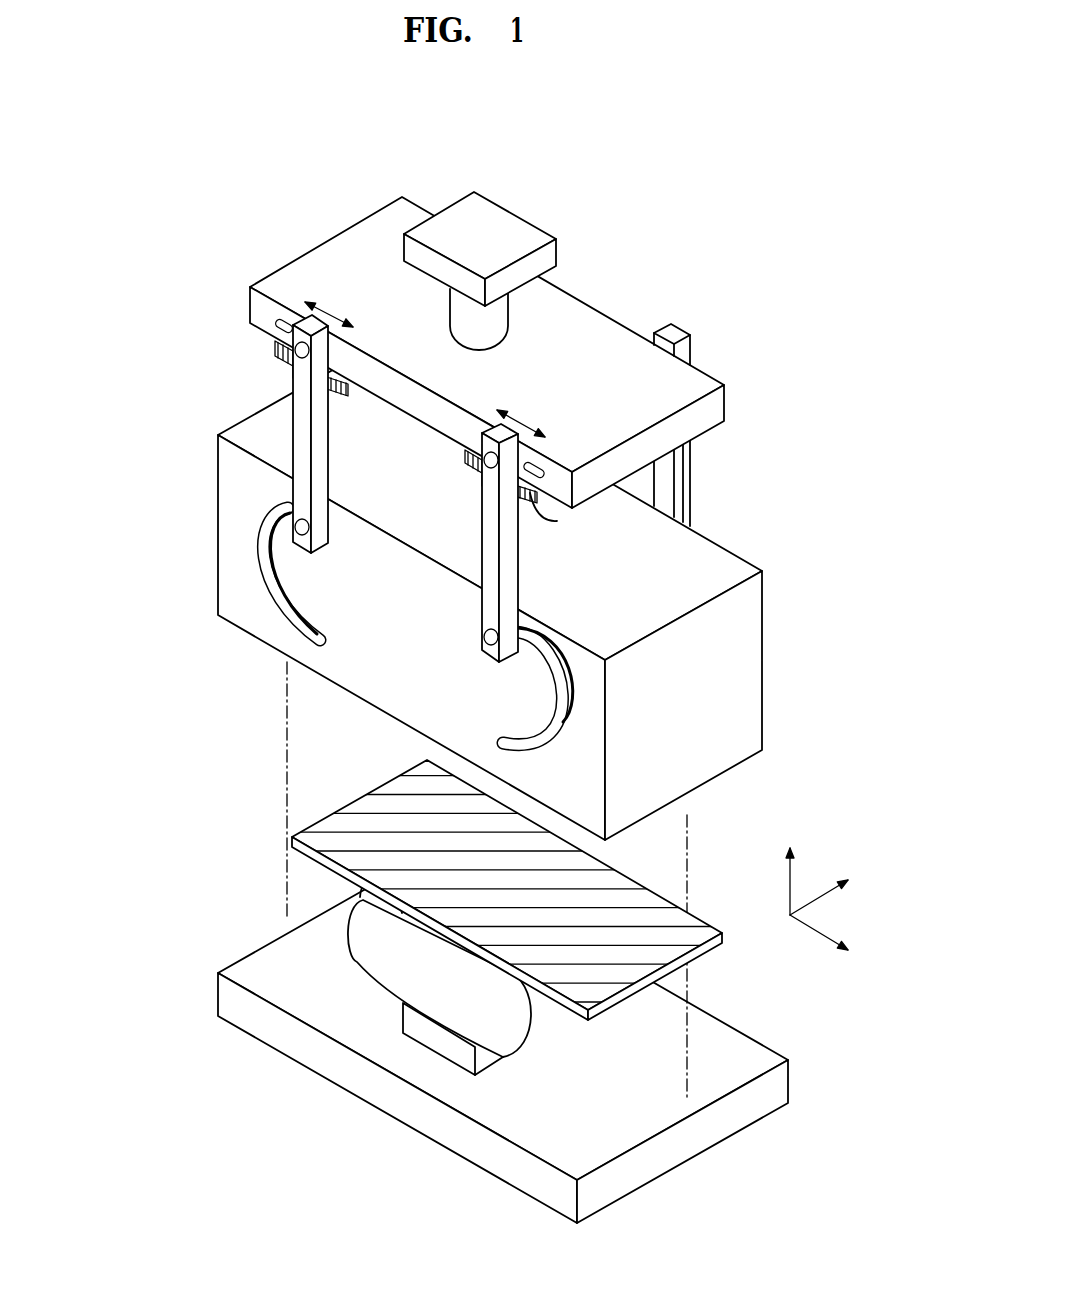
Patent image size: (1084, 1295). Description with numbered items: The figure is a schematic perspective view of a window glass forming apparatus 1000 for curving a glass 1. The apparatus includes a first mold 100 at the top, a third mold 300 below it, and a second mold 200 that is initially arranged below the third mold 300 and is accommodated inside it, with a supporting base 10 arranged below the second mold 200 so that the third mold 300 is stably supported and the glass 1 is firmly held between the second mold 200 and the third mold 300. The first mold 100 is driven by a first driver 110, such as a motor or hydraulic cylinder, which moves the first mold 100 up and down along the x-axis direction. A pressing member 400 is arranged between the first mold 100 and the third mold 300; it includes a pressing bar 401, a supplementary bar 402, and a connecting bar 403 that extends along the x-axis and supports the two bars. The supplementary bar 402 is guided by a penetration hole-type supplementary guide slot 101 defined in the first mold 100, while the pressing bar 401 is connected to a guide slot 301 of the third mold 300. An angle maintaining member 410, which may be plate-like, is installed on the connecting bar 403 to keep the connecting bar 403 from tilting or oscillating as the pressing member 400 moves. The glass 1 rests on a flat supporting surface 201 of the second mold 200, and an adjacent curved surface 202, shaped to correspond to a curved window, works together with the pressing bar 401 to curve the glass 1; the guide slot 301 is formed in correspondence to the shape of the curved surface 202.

The window glass forming apparatus 1000 is at (733, 267).
The glass 1 is at (372, 803).
The supporting base 10 is at (346, 1068).
The first mold 100 is at (592, 326).
The supplementary guide slot 101 is at (281, 321).
The first driver 110 is at (512, 222).
The second mold 200 is at (367, 985).
The supporting surface 201 is at (358, 873).
The curved surface 202 is at (352, 930).
The third mold 300 is at (233, 582).
The guide slot 301 is at (283, 607).
The pressing member 400 is at (152, 365).
The pressing bar 401 is at (292, 528).
The supplementary bar 402 is at (284, 348).
The connecting bar 403 is at (302, 408).
The angle maintaining member 410 is at (557, 521).